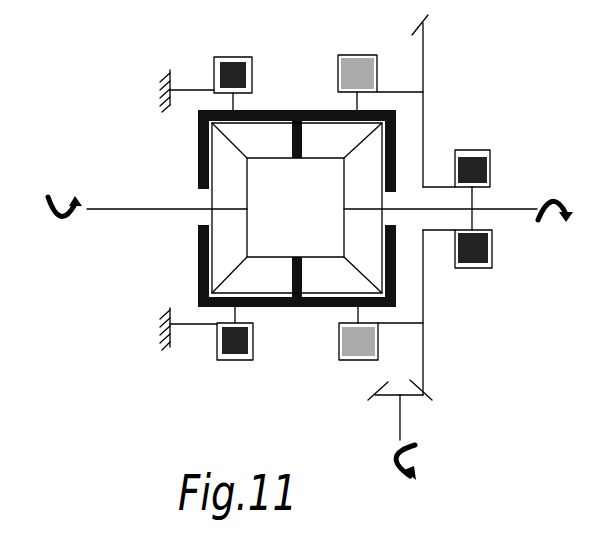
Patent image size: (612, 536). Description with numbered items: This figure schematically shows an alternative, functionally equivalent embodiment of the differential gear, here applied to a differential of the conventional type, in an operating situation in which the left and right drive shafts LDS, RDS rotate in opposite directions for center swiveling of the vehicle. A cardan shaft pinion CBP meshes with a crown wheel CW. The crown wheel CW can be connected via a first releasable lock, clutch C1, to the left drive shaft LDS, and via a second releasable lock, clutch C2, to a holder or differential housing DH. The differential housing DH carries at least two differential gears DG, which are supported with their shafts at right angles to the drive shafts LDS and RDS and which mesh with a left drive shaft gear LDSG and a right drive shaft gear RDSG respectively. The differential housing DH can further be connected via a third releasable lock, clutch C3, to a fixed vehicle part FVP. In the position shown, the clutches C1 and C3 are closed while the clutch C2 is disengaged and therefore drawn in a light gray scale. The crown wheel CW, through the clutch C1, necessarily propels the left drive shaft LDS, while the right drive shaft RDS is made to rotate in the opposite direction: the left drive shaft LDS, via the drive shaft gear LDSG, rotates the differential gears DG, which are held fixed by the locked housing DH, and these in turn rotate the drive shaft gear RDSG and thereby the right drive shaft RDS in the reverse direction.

The fixed vehicle part FVP is at (172, 70).
The third releasable lock (clutch) C3 is at (211, 189).
The second releasable lock (clutch) C2 is at (380, 189).
The differential housing DH is at (283, 108).
The differential gear DG is at (270, 143).
The right drive shaft gear RDSG is at (225, 192).
The left drive shaft gear LDSG is at (372, 248).
The right drive shaft RDS is at (128, 211).
The left drive shaft LDS is at (503, 207).
The first releasable lock (clutch) C1 is at (457, 193).
The crown wheel CW is at (423, 338).
The cardan shaft pinion CBP is at (407, 398).